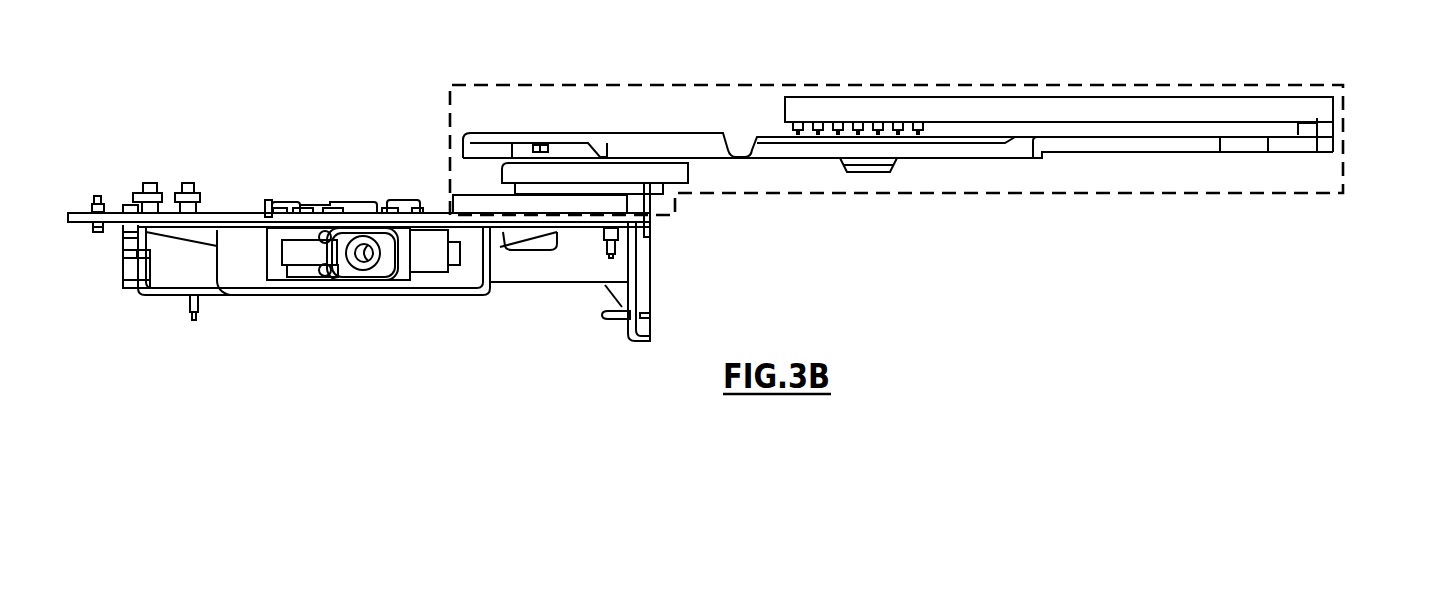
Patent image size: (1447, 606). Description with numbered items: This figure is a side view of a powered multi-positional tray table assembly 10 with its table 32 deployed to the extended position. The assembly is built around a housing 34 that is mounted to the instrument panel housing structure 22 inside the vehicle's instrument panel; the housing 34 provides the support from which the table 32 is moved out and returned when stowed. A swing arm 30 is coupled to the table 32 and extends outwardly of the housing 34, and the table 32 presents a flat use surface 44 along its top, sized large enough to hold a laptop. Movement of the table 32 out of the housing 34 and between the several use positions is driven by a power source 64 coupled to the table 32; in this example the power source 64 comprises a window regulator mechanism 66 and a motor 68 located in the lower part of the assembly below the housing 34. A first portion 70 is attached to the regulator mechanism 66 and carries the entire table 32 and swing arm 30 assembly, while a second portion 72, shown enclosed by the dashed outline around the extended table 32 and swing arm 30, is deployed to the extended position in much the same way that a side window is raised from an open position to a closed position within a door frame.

The table assembly 10 is at (1362, 84).
The instrument panel housing structure 22 is at (122, 247).
The swing arm 30 is at (773, 150).
The table 32 is at (1313, 119).
The housing 34 is at (483, 297).
The flat use surface 44 is at (1175, 97).
The power source 64 is at (263, 200).
The window regulator mechanism 66 is at (438, 210).
The motor 68 is at (362, 212).
The first portion 70 is at (562, 215).
The second portion 72 is at (973, 195).